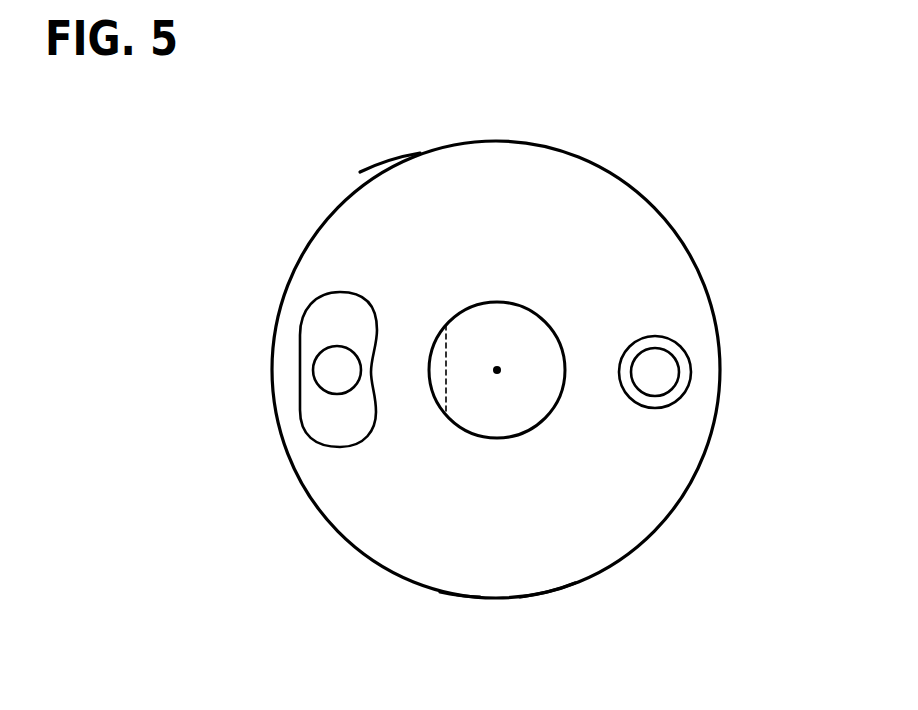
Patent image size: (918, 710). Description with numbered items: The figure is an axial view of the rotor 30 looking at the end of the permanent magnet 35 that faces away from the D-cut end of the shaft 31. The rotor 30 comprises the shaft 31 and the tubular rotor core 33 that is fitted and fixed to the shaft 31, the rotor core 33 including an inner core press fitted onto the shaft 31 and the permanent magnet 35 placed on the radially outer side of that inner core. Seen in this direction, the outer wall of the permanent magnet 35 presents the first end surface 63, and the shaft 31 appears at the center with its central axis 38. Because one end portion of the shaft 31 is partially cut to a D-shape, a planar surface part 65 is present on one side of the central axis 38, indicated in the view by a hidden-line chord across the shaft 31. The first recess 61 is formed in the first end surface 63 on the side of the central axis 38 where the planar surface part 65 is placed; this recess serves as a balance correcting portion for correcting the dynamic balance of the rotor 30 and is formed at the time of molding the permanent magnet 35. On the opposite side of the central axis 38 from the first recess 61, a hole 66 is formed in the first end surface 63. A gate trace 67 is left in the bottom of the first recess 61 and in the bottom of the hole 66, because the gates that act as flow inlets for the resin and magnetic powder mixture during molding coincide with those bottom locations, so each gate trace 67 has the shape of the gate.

The rotor 30 is at (309, 203).
The shaft 31 is at (522, 305).
The rotor core 33 is at (546, 597).
The permanent magnet 35 is at (457, 562).
The central axis 38 is at (496, 366).
The first recess 61 is at (327, 325).
The first end surface 63 is at (397, 218).
The planar surface part 65 is at (446, 380).
The hole 66 is at (668, 342).
The gate trace 67 is at (335, 371).